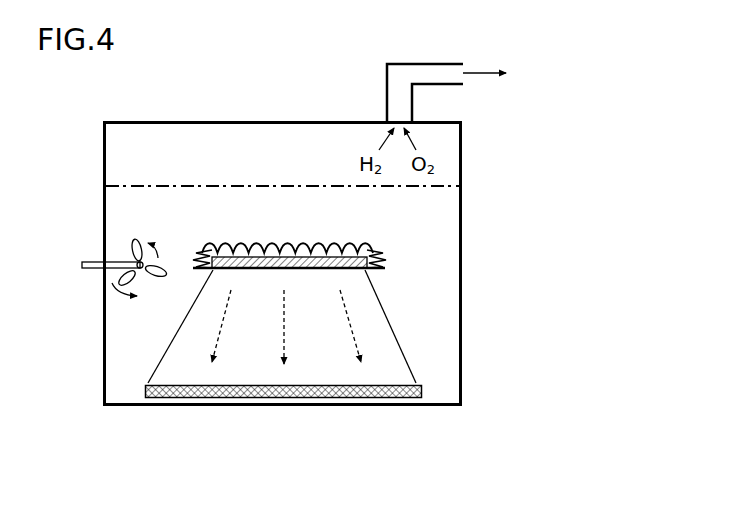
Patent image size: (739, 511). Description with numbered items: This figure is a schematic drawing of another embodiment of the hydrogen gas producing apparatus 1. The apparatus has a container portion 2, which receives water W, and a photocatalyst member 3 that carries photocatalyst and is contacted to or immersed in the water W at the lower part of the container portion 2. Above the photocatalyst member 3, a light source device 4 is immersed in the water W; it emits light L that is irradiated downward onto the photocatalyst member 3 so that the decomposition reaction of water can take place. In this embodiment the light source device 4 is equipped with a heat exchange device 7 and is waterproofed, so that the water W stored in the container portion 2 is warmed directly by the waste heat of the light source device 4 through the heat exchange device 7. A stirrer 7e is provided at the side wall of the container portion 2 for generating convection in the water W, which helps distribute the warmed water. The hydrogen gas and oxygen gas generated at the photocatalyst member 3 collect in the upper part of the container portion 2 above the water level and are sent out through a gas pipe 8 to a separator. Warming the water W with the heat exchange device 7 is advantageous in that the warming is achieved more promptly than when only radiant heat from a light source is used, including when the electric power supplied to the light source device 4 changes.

The hydrogen gas producing apparatus 1 is at (90, 116).
The container portion 2 is at (279, 121).
The photocatalyst member 3 is at (228, 398).
The light source device 4 is at (314, 270).
The heat exchange device 7 is at (301, 262).
The stirrer 7e is at (90, 263).
The gas pipe 8 is at (386, 110).
The light L is at (286, 327).
The water W is at (126, 350).